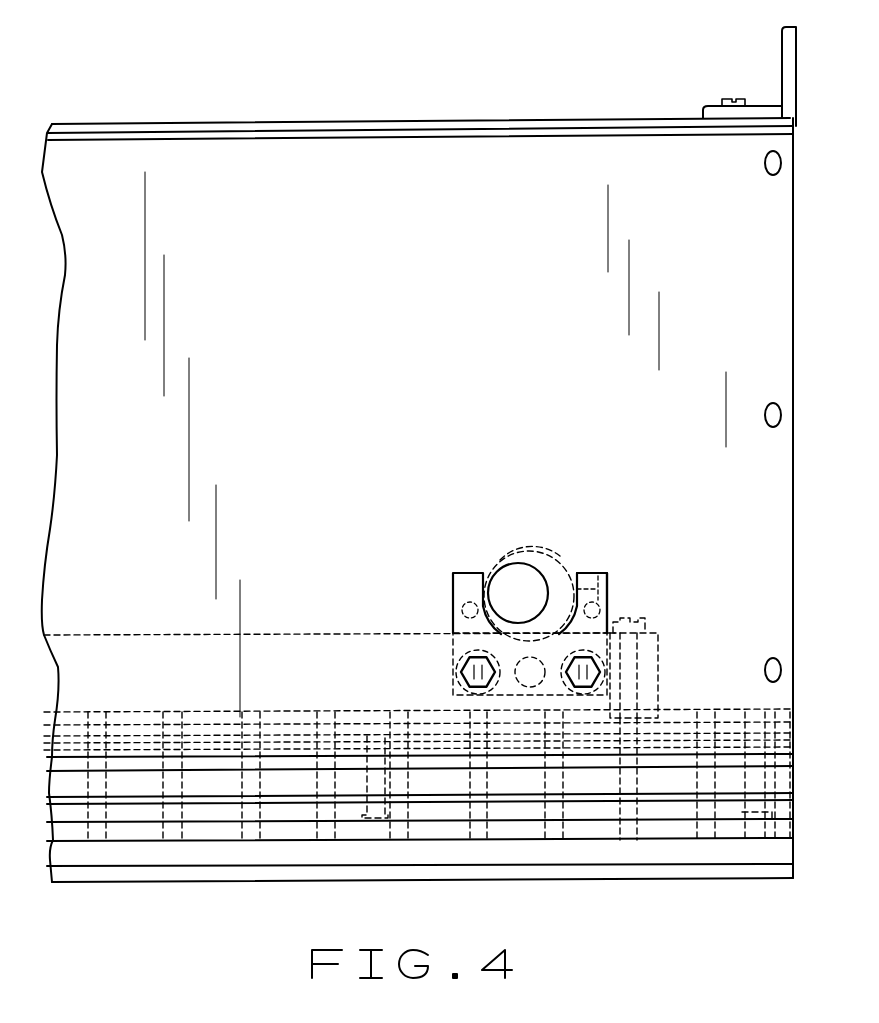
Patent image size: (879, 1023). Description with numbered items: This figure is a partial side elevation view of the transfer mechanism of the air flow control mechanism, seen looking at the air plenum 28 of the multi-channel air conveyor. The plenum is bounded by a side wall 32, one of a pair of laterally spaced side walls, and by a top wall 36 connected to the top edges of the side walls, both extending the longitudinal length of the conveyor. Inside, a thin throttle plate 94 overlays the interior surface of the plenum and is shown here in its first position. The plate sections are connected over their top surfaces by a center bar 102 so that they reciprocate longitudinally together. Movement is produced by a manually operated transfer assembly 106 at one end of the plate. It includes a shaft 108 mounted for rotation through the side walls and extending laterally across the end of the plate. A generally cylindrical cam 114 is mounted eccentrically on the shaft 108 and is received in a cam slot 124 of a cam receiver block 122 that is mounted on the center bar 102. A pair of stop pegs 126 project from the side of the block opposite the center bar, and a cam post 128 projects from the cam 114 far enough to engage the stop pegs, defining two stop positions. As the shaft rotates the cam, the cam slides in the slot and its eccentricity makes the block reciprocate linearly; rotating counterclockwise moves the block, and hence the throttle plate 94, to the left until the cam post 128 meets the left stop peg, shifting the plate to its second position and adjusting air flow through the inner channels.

The air plenum 28 is at (417, 307).
The side wall 32 is at (777, 307).
The top wall 36 is at (233, 124).
The throttle plate 94 is at (643, 712).
The center bar 102 is at (177, 633).
The transfer assembly 106 is at (608, 520).
The shaft 108 is at (497, 590).
The cam 114 is at (540, 549).
The cam receiver block 122 is at (592, 573).
The cam slot 124 is at (495, 596).
The stop pegs 126 is at (463, 603).
The cam post 128 is at (612, 574).